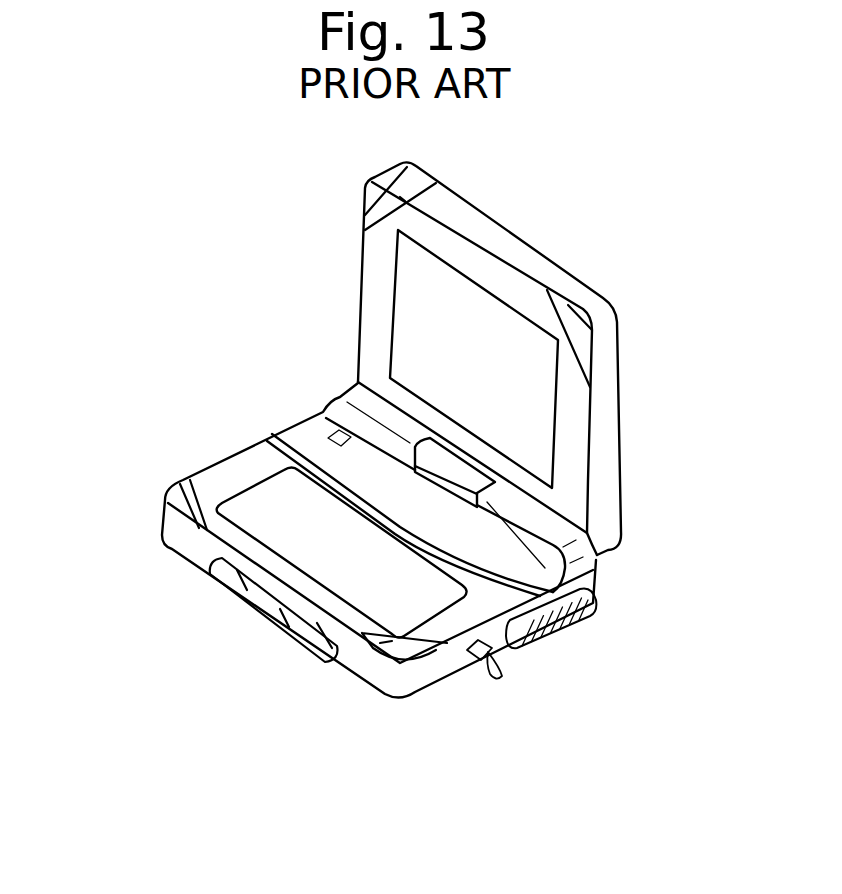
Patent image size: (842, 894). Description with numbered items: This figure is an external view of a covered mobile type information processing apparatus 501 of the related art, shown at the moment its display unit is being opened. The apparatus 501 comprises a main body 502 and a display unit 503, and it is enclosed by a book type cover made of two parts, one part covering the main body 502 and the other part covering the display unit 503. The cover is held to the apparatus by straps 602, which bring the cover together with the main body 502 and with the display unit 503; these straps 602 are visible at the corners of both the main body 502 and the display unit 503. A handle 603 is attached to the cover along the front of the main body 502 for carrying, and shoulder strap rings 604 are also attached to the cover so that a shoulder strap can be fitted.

The mobile type information processing apparatus 501 is at (372, 267).
The main body 502 is at (447, 628).
The display unit 503 is at (573, 402).
The straps 602 is at (437, 176).
The handle 603 is at (277, 622).
The shoulder strap rings 604 is at (503, 672).